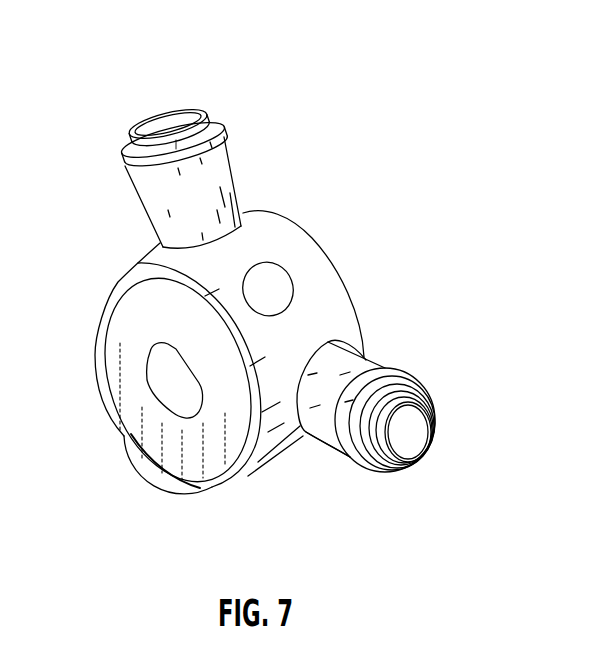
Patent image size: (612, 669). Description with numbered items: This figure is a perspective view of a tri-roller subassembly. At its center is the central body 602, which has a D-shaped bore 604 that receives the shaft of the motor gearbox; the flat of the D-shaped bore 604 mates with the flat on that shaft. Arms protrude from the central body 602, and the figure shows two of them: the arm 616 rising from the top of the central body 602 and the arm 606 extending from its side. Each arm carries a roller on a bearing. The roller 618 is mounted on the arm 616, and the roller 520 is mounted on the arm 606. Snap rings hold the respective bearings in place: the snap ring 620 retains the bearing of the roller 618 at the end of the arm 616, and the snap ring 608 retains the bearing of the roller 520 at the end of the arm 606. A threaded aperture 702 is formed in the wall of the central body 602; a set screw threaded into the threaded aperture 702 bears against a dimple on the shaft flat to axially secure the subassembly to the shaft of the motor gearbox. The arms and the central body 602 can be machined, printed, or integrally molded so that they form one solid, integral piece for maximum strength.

The roller 520 is at (345, 459).
The central body 602 is at (262, 227).
The D-shaped bore 604 is at (151, 379).
The arm 606 is at (300, 433).
The snap ring 608 is at (397, 467).
The arm 616 is at (168, 213).
The roller 618 is at (125, 172).
The snap ring 620 is at (183, 113).
The threaded aperture 702 is at (272, 288).